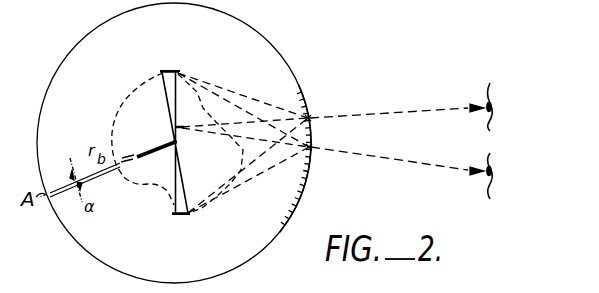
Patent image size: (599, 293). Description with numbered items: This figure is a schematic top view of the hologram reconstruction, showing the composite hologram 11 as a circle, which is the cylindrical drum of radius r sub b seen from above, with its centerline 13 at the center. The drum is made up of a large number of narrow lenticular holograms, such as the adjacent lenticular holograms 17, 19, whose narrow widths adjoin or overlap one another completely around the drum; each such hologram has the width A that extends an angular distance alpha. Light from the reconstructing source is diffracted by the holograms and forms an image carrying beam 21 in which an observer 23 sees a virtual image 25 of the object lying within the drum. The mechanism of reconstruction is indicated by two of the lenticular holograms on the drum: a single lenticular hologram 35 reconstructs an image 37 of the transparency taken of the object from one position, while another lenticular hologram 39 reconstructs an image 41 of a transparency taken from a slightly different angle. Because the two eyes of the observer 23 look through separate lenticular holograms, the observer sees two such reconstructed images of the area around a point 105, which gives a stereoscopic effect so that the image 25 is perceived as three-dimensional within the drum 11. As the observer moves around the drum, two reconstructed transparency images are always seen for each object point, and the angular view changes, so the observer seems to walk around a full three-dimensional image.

The composite hologram 11 is at (272, 44).
The centerline 13 is at (172, 141).
The lenticular hologram 17 is at (298, 197).
The lenticular hologram 19 is at (306, 177).
The image carrying beam 21 is at (408, 145).
The observer 23 is at (536, 131).
The virtual image 25 is at (125, 102).
The lenticular hologram 35 is at (308, 118).
The image 37 is at (164, 75).
The lenticular hologram 39 is at (309, 147).
The image 41 is at (175, 213).
The point 105 is at (181, 128).